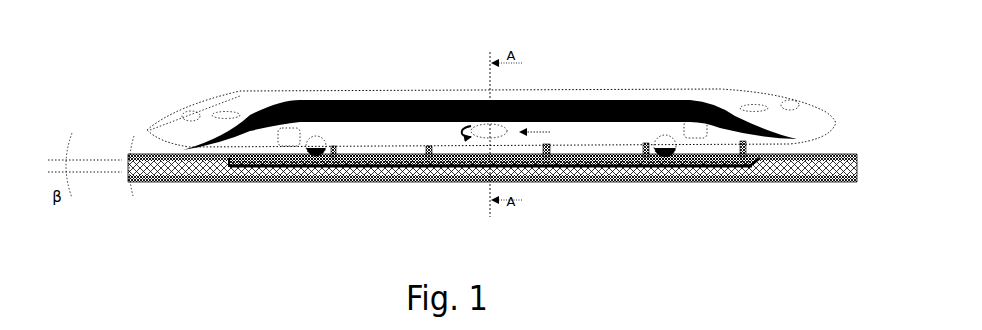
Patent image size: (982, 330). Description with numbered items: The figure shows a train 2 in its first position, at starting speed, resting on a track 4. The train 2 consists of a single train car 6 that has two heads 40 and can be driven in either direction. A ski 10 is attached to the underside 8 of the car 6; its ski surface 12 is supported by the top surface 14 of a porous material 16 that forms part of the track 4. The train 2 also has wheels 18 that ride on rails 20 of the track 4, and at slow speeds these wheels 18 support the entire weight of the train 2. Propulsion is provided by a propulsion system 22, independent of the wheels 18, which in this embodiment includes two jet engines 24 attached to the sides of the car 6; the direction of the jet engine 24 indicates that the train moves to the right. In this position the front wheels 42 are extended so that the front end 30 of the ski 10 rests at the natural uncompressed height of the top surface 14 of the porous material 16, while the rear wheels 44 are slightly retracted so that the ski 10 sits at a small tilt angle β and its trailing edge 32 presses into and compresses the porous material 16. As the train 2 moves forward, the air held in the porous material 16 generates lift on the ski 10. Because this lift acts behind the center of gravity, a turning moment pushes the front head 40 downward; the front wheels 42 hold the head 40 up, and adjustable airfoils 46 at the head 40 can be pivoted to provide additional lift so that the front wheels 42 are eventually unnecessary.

The train 2 is at (710, 72).
The track 4 is at (497, 193).
The train car 6 is at (578, 92).
The underside 8 is at (569, 160).
The ski 10 is at (371, 169).
The ski surface 12 is at (411, 171).
The top surface 14 is at (810, 155).
The porous material 16 is at (778, 183).
The wheels 18 is at (307, 160).
The rails 20 is at (151, 154).
The propulsion system 22 is at (563, 131).
The jet engine 24 is at (477, 96).
The front end 30 is at (748, 160).
The trailing edge 32 is at (229, 160).
The head 40 is at (174, 111).
The front wheels 42 is at (680, 160).
The rear wheels 44 is at (334, 159).
The adjustable airfoil 46 is at (224, 112).